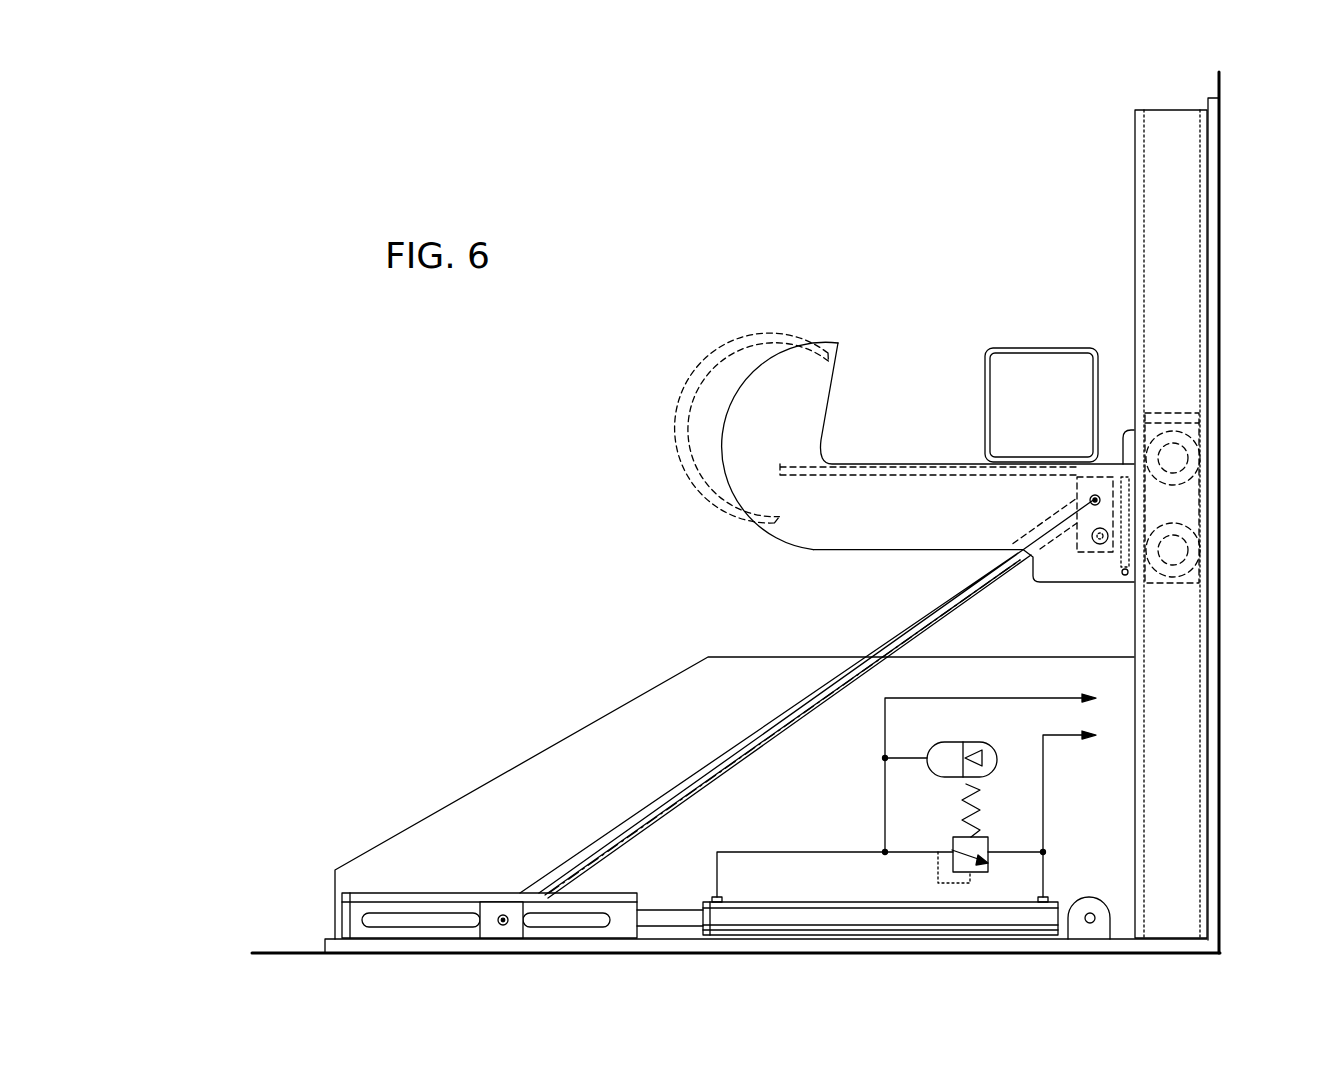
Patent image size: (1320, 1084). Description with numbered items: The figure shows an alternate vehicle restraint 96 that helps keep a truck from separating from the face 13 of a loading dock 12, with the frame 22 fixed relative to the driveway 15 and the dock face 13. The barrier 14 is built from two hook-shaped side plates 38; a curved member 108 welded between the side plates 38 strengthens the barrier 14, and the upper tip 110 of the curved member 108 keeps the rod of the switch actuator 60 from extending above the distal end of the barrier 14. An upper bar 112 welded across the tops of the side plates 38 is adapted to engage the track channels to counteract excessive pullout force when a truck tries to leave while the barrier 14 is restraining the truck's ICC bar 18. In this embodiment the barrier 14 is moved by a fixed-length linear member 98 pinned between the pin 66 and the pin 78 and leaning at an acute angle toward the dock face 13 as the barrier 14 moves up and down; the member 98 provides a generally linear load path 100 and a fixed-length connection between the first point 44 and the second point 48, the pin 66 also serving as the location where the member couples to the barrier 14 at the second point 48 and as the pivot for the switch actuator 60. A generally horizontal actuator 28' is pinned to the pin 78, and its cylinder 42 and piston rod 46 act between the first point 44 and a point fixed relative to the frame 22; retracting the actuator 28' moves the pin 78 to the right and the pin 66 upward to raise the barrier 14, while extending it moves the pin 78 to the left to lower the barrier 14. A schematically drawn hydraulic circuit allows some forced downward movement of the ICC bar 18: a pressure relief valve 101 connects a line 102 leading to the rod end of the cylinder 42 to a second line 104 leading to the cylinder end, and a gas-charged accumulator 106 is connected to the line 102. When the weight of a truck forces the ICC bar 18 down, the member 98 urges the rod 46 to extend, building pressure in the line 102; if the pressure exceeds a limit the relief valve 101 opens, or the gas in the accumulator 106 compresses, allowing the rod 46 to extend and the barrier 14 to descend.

The loading dock 12 is at (1219, 90).
The dock face 13 is at (1208, 708).
The barrier 14 is at (785, 545).
The driveway 15 is at (303, 950).
The ICC bar 18 is at (985, 400).
The frame 22 is at (662, 684).
The actuator 28' is at (753, 880).
The hook-shaped side plates 38 is at (914, 527).
The cylinder 42 is at (838, 900).
The first point 44 is at (480, 917).
The piston rod 46 is at (675, 905).
The second point 48 is at (1095, 495).
The switch actuator 60 is at (795, 477).
The pin 66 is at (1090, 500).
The pin 78 is at (503, 915).
The vehicle restraint 96 is at (622, 500).
The fixed-length linear member 98 is at (1093, 915).
The load path 100 is at (690, 783).
The pressure relief valve 101 is at (988, 843).
The line 102 is at (885, 813).
The second line 104 is at (1043, 812).
The gas-charged accumulator 106 is at (947, 742).
The curved member 108 is at (740, 440).
The upper tip 110 is at (820, 353).
The upper bar 112 is at (1163, 412).